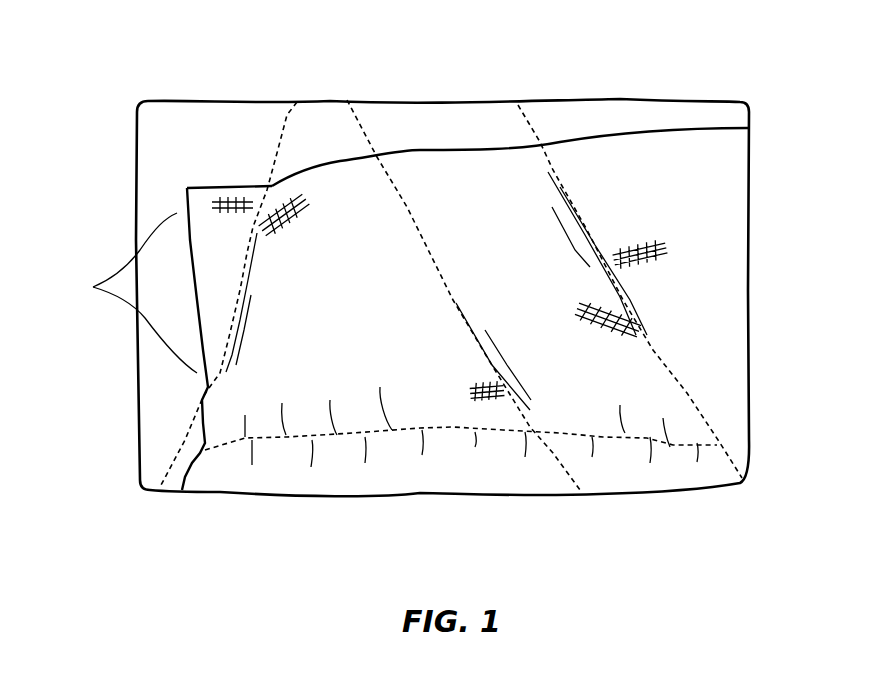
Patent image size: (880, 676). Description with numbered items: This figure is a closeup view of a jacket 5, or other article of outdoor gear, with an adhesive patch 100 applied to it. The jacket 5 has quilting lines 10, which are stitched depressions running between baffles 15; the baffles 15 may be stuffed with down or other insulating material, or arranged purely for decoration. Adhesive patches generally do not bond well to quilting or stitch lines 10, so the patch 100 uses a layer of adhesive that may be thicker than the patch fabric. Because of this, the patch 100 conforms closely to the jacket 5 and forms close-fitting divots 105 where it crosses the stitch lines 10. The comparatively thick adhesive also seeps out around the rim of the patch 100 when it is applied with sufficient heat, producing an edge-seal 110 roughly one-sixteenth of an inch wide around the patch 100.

The jacket 5 is at (227, 155).
The quilting lines 10 is at (527, 122).
The baffles 15 is at (392, 130).
The adhesive patch 100 is at (452, 453).
The divots 105 is at (667, 370).
The edge-seal 110 is at (161, 338).